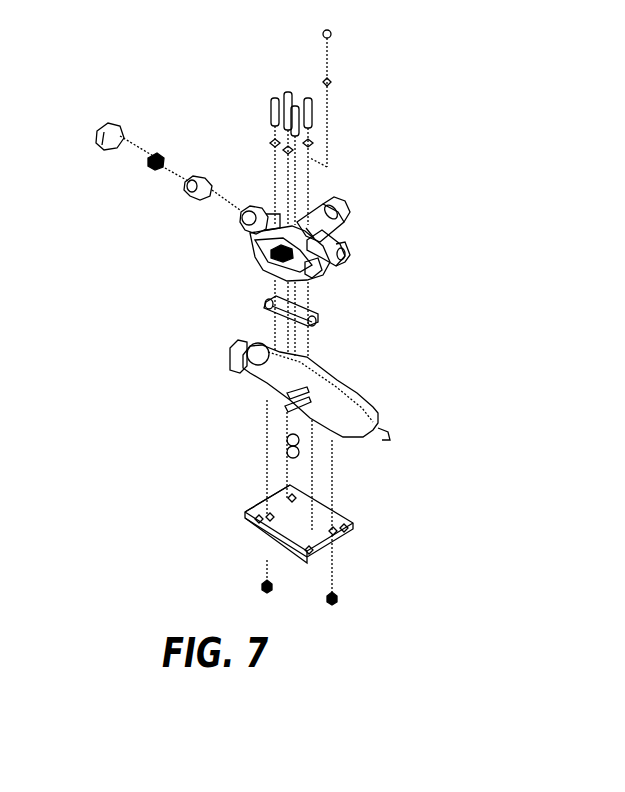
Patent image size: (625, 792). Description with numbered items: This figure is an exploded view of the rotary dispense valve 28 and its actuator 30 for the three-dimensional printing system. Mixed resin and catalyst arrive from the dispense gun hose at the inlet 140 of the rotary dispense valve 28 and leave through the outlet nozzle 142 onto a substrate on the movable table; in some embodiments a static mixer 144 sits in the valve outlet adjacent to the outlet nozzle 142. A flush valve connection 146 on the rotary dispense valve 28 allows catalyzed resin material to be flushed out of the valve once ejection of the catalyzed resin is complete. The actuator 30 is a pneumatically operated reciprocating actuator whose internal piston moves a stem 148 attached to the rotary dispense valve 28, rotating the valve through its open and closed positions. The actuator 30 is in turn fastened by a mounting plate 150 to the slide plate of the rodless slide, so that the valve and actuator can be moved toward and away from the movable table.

The rotary dispense valve 28 is at (232, 141).
The actuator 30 is at (256, 387).
The inlet 140 is at (346, 262).
The outlet nozzle 142 is at (146, 170).
The static mixer 144 is at (196, 198).
The flush valve connection 146 is at (347, 223).
The stem 148 is at (284, 273).
The mounting plate 150 is at (256, 531).